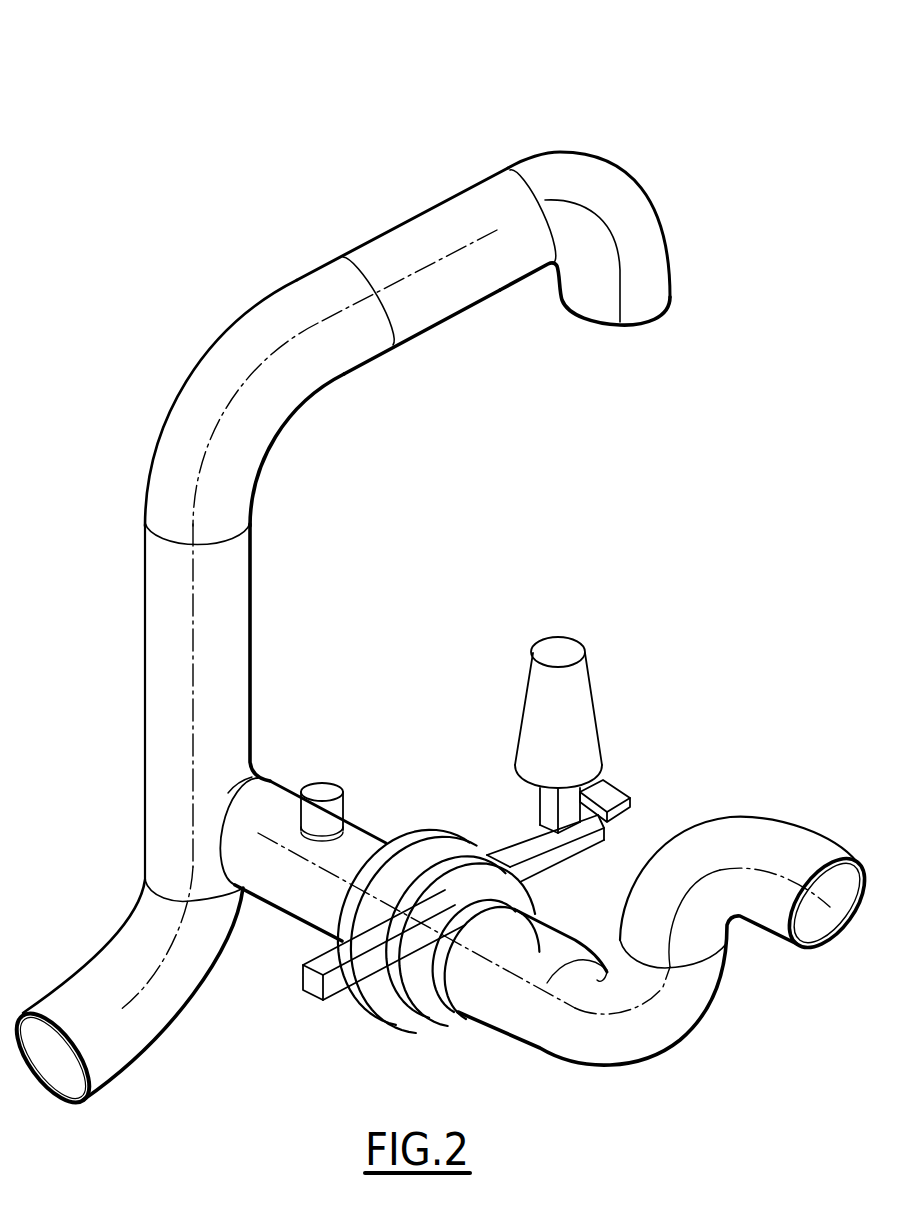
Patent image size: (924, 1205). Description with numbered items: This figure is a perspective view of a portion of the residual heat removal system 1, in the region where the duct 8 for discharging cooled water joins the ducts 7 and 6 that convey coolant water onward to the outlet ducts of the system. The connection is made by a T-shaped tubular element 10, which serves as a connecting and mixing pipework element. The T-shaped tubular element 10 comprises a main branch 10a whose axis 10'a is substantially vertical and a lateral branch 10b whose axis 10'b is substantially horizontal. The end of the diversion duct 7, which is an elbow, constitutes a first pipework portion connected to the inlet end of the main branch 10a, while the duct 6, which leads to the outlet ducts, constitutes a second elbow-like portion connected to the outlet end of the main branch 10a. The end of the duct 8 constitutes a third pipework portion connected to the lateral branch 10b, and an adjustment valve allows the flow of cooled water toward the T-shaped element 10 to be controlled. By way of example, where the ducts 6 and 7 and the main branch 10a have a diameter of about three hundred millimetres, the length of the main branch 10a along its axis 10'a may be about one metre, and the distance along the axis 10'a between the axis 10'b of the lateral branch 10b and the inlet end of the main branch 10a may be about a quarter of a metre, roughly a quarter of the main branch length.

The residual heat removal system 1 is at (591, 124).
The duct 6 is at (403, 239).
The diversion duct 7 is at (113, 1057).
The duct for discharging cooled water 8 is at (647, 1023).
The T-shaped tubular element 10 is at (176, 695).
The main branch 10a is at (223, 707).
The lateral branch 10b is at (263, 777).
The vertical axis of the main branch 10'a is at (129, 702).
The axis of the lateral branch 10'b is at (288, 936).